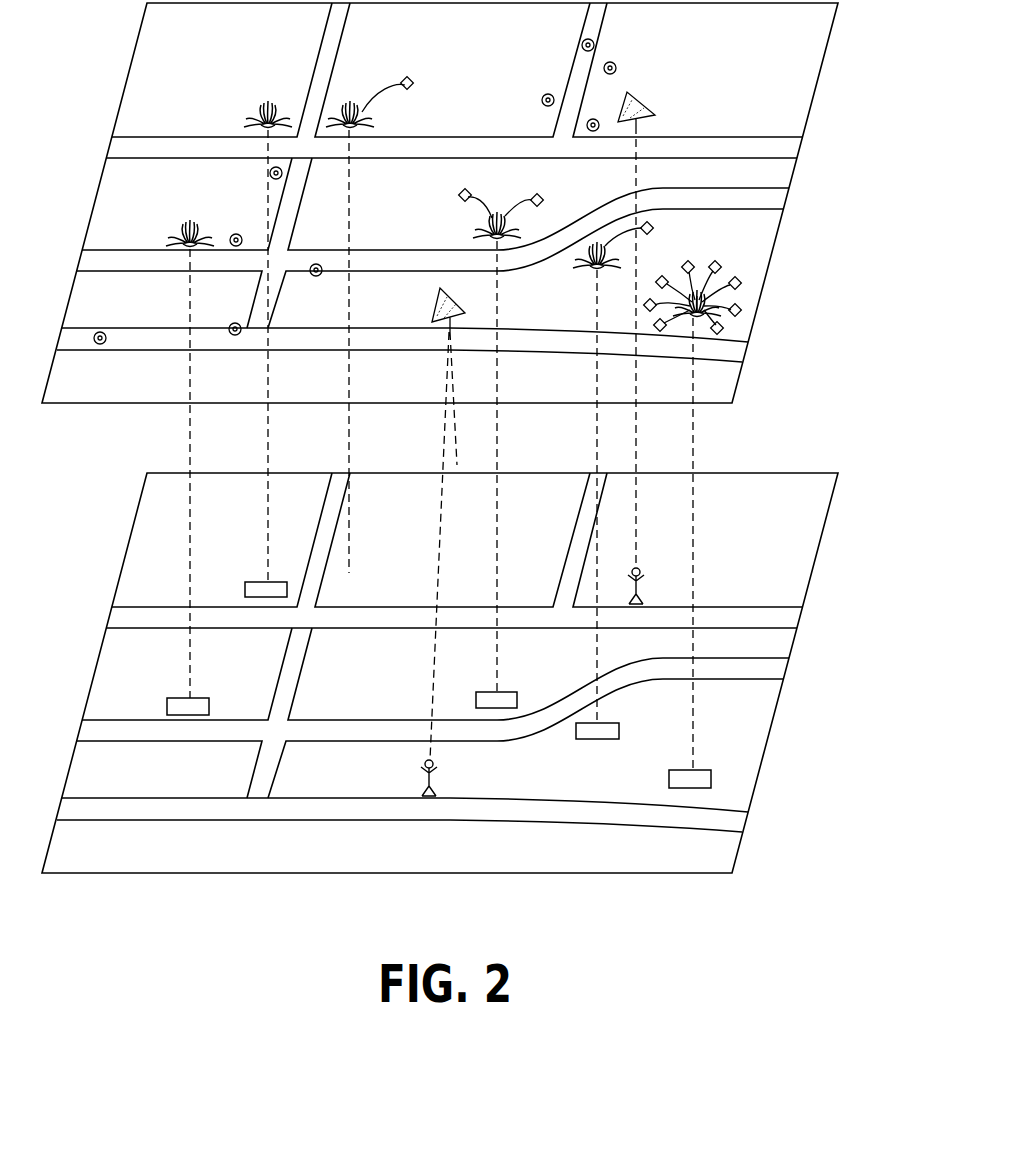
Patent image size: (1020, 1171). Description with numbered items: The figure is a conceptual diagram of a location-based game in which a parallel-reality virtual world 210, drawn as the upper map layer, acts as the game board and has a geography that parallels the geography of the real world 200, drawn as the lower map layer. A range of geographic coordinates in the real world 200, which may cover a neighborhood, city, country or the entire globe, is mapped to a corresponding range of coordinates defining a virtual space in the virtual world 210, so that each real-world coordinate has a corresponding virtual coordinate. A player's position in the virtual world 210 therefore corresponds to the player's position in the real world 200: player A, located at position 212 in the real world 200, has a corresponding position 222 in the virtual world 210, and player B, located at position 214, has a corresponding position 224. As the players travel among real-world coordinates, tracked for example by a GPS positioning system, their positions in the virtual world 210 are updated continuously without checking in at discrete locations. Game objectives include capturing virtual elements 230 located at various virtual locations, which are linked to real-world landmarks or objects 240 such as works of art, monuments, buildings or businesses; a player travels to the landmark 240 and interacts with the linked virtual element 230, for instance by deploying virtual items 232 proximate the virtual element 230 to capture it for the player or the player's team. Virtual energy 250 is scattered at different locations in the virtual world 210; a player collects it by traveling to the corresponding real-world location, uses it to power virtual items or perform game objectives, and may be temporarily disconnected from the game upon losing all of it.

The real world 200 is at (806, 582).
The parallel-reality virtual world 210 is at (808, 118).
The position of player A in the real world 212 is at (424, 766).
The position of player B in the real world 214 is at (643, 569).
The position of player A in the virtual world 222 is at (466, 313).
The position of player B in the virtual world 224 is at (660, 112).
The virtual element 230 is at (268, 105).
The virtual item 232 is at (413, 84).
The real-world landmark or object 240 is at (262, 582).
The virtual energy 250 is at (616, 68).